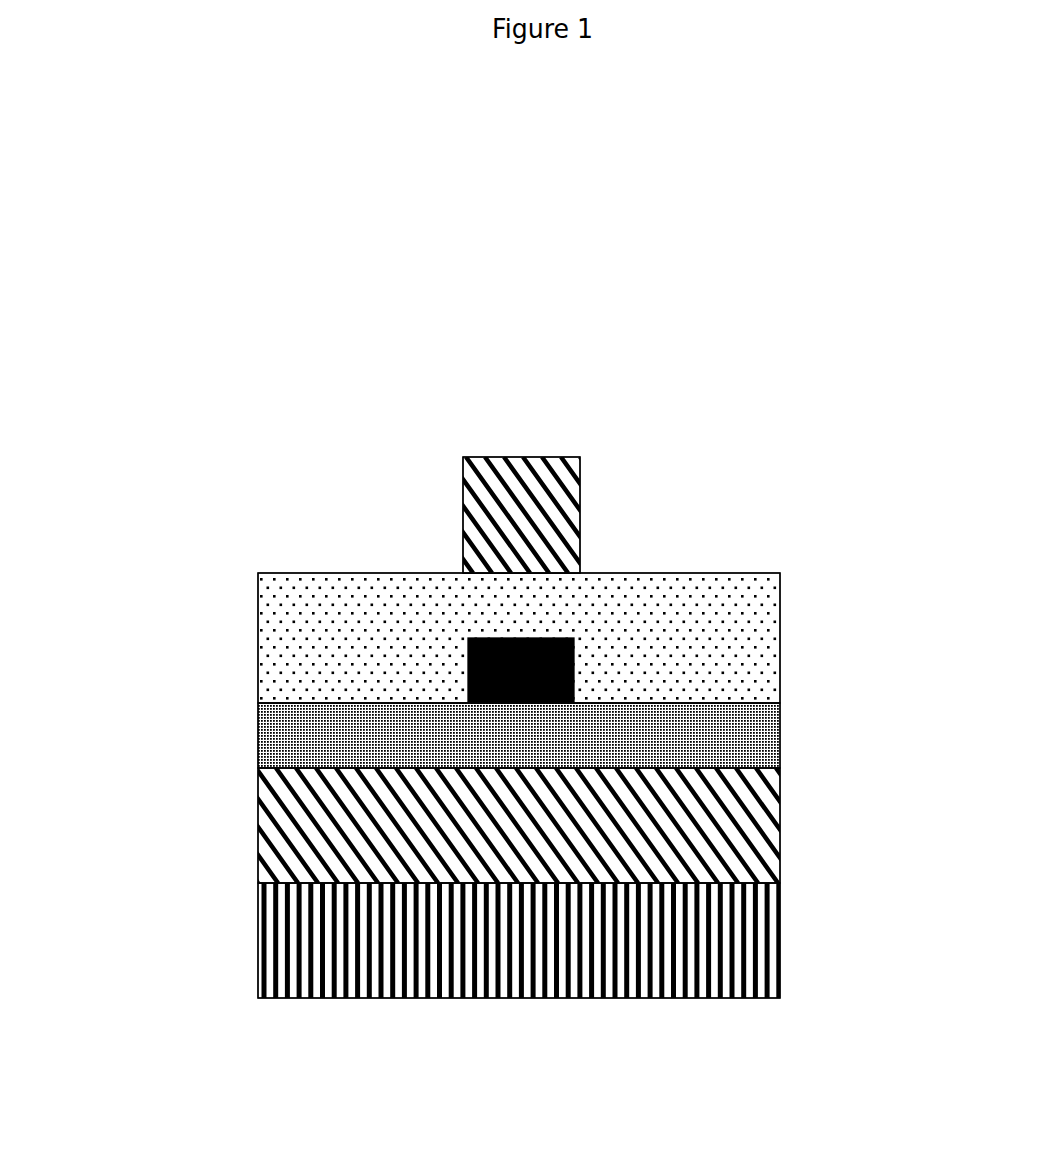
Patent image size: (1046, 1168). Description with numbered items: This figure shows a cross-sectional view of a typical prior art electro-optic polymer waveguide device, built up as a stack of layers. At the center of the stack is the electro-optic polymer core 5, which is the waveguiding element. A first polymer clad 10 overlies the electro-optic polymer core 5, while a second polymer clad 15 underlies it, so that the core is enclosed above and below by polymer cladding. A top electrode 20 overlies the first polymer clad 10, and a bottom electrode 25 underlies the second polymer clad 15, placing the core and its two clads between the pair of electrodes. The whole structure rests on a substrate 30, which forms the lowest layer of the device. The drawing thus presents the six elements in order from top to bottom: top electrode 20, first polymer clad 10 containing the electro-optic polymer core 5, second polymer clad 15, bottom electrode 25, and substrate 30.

The electro-optic polymer core 5 is at (595, 672).
The first polymer clad 10 is at (240, 637).
The second polymer clad 15 is at (240, 733).
The top electrode 20 is at (445, 515).
The bottom electrode 25 is at (240, 822).
The substrate 30 is at (240, 940).